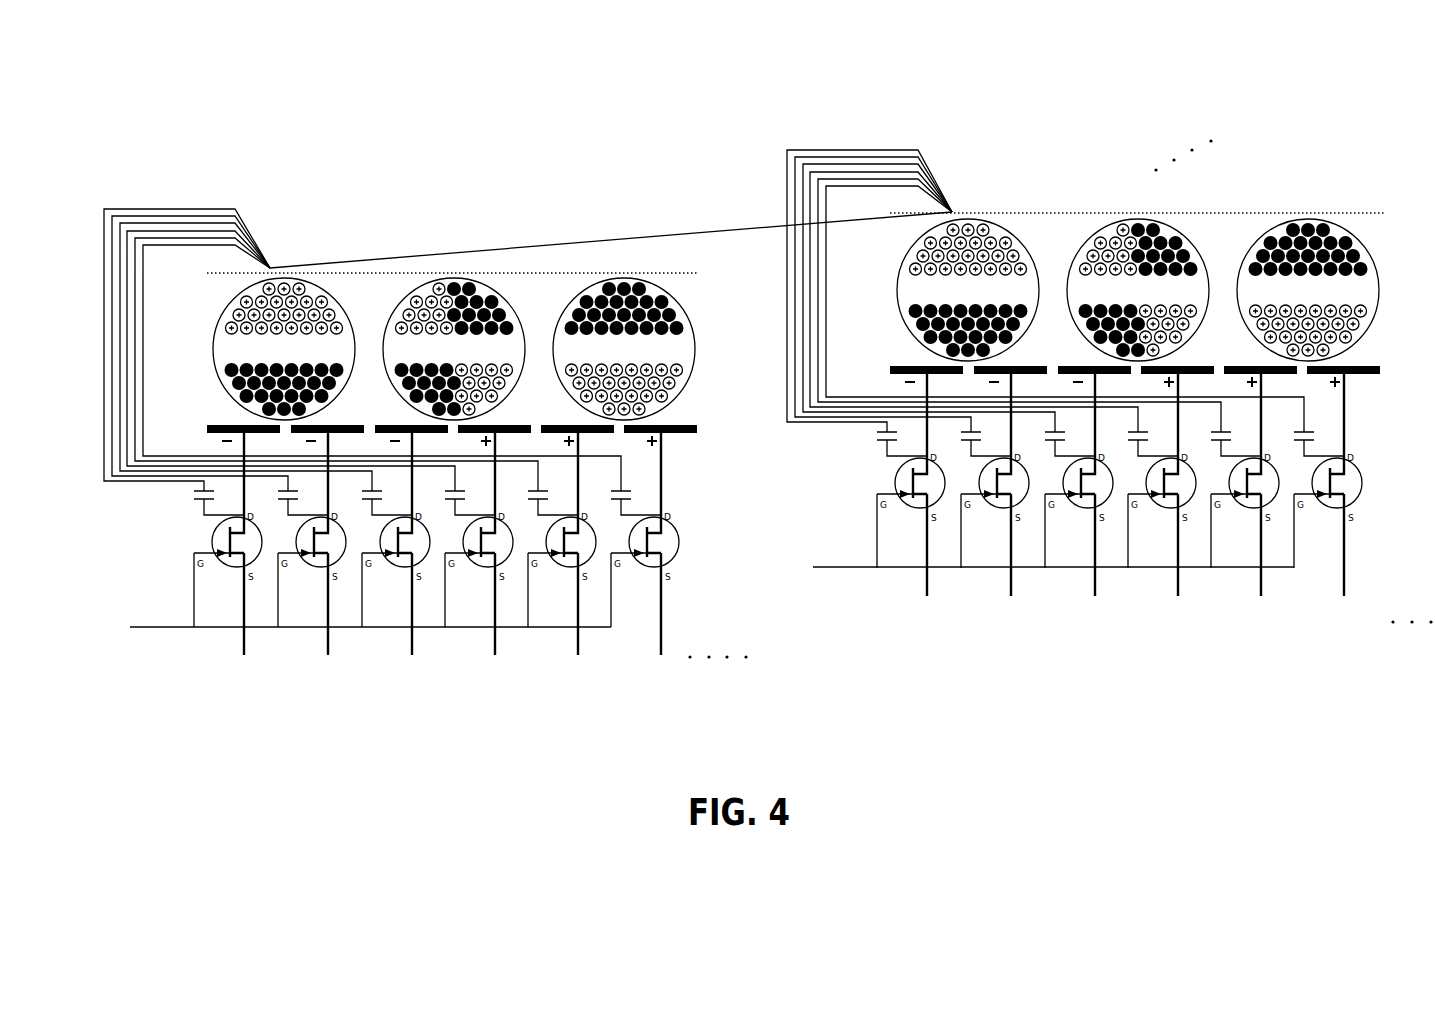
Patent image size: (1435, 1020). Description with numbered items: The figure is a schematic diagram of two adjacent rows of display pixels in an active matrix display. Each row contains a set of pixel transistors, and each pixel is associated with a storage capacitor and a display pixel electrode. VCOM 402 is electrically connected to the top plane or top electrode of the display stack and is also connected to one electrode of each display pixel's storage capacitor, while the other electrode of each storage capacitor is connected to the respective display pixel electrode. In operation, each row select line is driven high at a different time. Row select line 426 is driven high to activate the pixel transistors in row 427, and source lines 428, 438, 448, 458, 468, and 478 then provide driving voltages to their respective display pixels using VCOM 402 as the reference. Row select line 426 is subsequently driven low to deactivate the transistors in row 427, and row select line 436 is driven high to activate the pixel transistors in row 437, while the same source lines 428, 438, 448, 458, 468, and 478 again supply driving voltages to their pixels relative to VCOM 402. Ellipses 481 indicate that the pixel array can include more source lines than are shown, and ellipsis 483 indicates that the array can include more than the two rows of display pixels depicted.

The VCOM 402 is at (209, 184).
The row select line 426 is at (352, 627).
The row 427 is at (164, 540).
The source line 428 is at (578, 547).
The row select line 436 is at (1035, 568).
The row 437 is at (837, 475).
The source line 438 is at (662, 547).
The source line 448 is at (746, 547).
The source line 458 is at (829, 547).
The source line 468 is at (912, 547).
The source line 478 is at (995, 547).
The ellipses 481 is at (770, 665).
The ellipsis 483 is at (1226, 114).